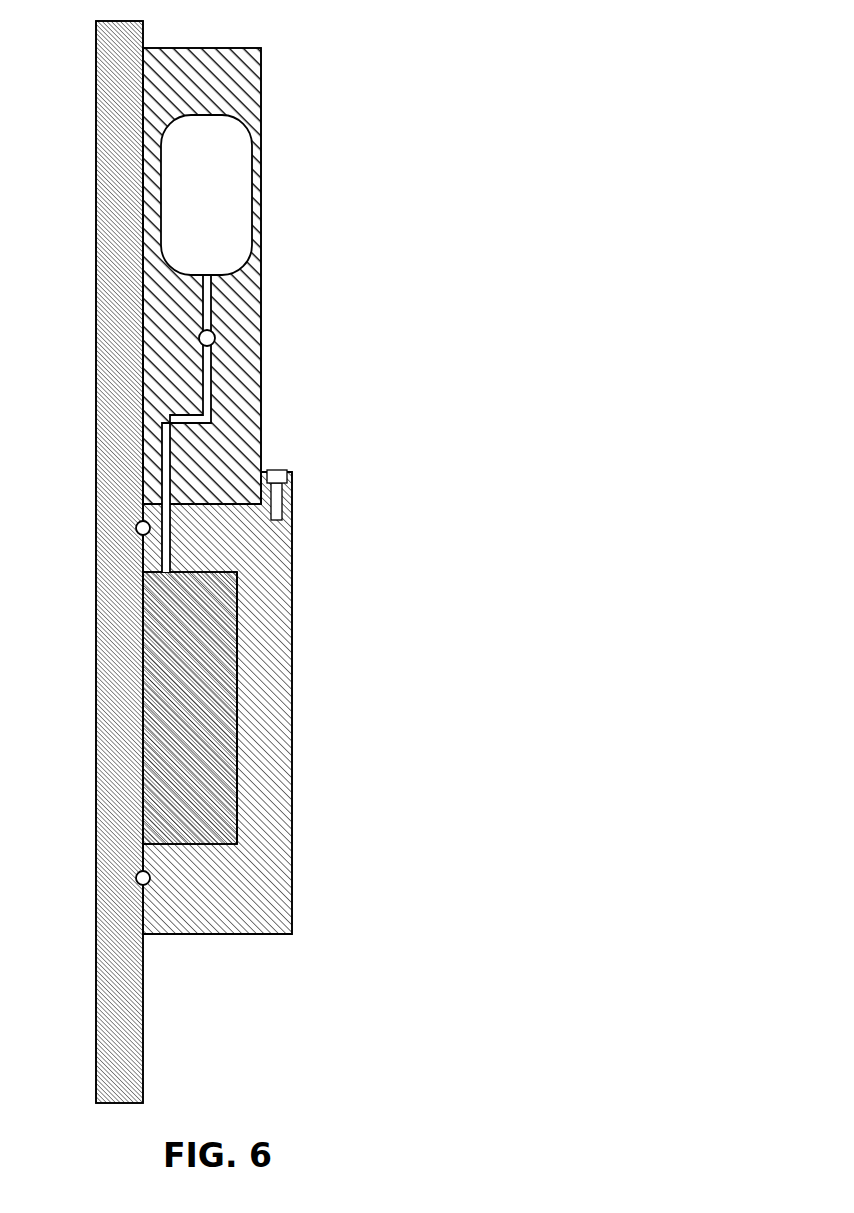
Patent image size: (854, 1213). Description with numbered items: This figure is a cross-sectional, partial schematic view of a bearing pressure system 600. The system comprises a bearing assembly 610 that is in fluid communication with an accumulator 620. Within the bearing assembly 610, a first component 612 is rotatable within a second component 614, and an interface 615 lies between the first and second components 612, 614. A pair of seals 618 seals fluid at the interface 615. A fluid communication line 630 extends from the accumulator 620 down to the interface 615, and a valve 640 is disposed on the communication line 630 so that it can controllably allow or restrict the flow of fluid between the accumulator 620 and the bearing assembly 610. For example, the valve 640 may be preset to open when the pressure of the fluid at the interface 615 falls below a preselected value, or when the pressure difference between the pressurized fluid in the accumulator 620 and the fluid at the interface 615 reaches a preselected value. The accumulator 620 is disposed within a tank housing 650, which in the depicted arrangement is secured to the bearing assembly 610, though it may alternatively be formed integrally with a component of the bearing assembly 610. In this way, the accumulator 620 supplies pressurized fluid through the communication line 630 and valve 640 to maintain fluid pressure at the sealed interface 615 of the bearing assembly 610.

The bearing pressure system 600 is at (271, 562).
The bearing assembly 610 is at (311, 610).
The first component 612 is at (194, 692).
The second component 614 is at (208, 894).
The interface 615 is at (238, 737).
The seals 618 is at (138, 522).
The accumulator 620 is at (221, 221).
The fluid communication line 630 is at (162, 455).
The valve 640 is at (214, 333).
The tank housing 650 is at (261, 181).